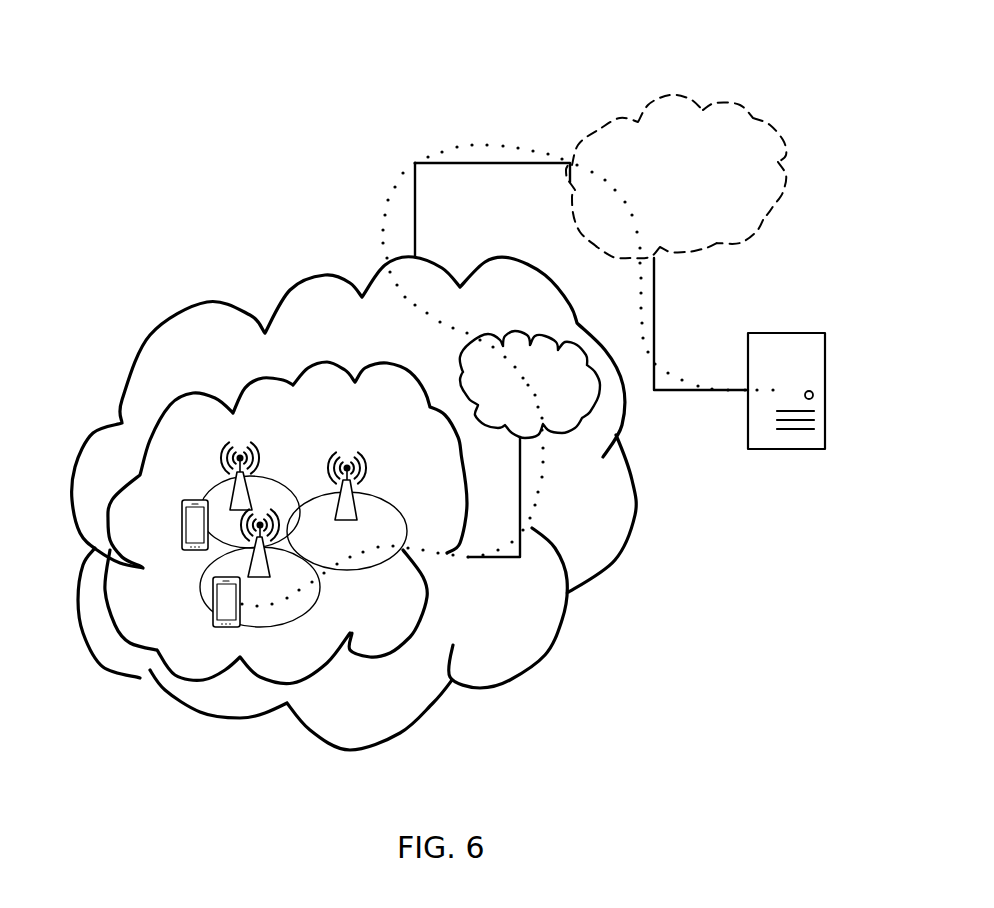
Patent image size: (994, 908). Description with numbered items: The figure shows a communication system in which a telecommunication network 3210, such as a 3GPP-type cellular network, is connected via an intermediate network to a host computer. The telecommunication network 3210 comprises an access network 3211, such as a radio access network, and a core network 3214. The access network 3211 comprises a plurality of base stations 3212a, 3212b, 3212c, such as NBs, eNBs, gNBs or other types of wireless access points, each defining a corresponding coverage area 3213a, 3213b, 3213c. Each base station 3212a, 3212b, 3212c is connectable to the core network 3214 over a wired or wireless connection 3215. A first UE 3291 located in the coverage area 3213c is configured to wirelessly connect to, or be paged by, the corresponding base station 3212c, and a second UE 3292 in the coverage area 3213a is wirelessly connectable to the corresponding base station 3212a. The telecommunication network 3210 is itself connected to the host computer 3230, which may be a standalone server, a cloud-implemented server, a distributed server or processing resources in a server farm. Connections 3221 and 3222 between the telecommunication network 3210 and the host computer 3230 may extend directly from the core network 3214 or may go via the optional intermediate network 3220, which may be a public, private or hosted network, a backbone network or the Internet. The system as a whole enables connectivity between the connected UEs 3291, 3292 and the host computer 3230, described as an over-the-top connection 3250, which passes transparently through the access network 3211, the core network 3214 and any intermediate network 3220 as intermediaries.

The telecommunication network 3210 is at (379, 317).
The access network 3211 is at (337, 414).
The base station 3212a is at (262, 538).
The base station 3212b is at (358, 470).
The base station 3212c is at (233, 463).
The coverage area 3213a is at (320, 588).
The coverage area 3213b is at (407, 549).
The coverage area 3213c is at (207, 497).
The core network 3214 is at (598, 394).
The wired or wireless connection 3215 is at (520, 478).
The intermediate network 3220 is at (701, 186).
The connection 3221 is at (488, 163).
The connection 3222 is at (703, 392).
The host computer 3230 is at (786, 405).
The over-the-top (OTT) connection 3250 is at (395, 188).
The first UE 3291 is at (185, 550).
The second UE 3292 is at (213, 625).